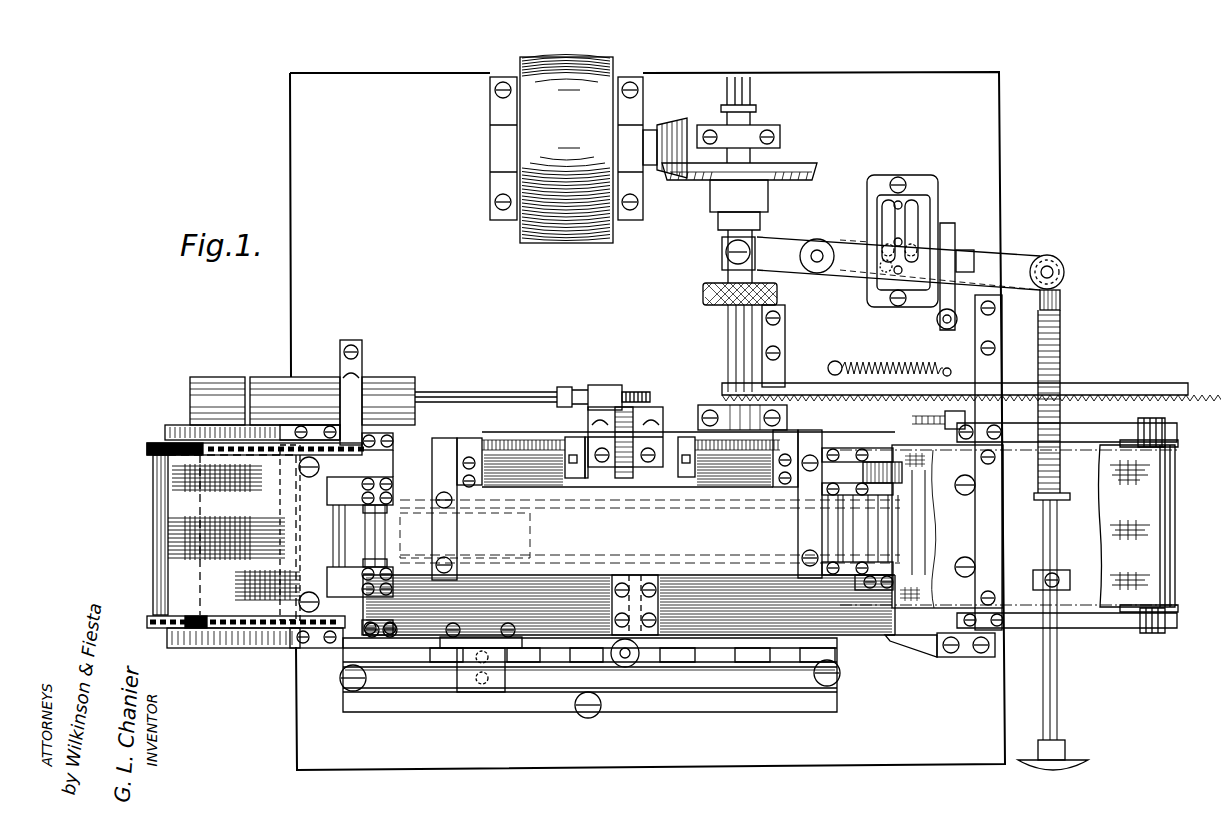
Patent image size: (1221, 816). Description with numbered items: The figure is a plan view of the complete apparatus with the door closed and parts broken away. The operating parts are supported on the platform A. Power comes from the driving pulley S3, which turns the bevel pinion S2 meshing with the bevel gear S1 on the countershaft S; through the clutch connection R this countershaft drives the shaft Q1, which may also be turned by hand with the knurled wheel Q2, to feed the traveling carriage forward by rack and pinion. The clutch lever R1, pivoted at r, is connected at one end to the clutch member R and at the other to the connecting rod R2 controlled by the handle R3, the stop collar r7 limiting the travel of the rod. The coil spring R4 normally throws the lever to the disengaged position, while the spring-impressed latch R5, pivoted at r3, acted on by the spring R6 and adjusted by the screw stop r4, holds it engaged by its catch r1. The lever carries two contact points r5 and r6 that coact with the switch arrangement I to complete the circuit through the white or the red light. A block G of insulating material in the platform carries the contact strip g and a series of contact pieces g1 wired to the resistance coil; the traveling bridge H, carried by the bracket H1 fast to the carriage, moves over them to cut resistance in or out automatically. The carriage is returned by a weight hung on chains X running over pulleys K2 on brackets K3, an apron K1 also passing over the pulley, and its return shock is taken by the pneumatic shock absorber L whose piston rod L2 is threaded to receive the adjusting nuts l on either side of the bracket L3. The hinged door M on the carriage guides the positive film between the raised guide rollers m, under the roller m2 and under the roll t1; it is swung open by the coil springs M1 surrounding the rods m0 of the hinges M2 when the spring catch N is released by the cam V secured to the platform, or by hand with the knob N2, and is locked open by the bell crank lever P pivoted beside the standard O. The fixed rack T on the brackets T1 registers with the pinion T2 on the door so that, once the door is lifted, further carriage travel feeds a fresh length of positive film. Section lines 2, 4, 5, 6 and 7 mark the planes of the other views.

The platform A is at (988, 115).
The driving pulley S3 is at (580, 55).
The bevel pinion S2 is at (670, 124).
The bevel gear S1 is at (806, 163).
The countershaft S is at (735, 228).
The clutch connection R is at (722, 252).
The clutch lever R1 is at (786, 240).
The pivot r is at (817, 245).
The switch arrangement I is at (882, 212).
The contact point r6 is at (876, 238).
The contact point r5 is at (947, 222).
The latch pivot r3 is at (937, 321).
The spring impression latch R5 is at (962, 250).
The catch r1 is at (975, 258).
The knurled wheel Q2 is at (703, 292).
The shaft Q1 is at (728, 350).
The brackets T1 is at (788, 362).
The rack T is at (1100, 383).
The hinges M2 is at (786, 432).
The spring R6 is at (898, 368).
The coil spring R4 is at (1060, 358).
The adjustable screw stop r4 is at (912, 419).
The connecting rod R2 is at (1058, 683).
The handle R3 is at (1055, 748).
The stop collar r7 is at (1062, 572).
The cam V is at (912, 652).
The pneumatic shock absorber L is at (268, 378).
The adjusting nuts l is at (560, 390).
The bracket L3 is at (598, 385).
The piston rod L2 is at (646, 392).
The standard O is at (655, 418).
The bell crank lever P is at (628, 480).
The brackets K3 is at (165, 430).
The pulleys K2 is at (146, 450).
The apron K1 is at (153, 472).
The chains X is at (300, 446).
The raised guide rollers m is at (340, 540).
The roller m2 is at (380, 530).
The hinged door M is at (688, 564).
The rods m0 is at (490, 478).
The coil springs M1 is at (545, 470).
The spring catch N is at (638, 575).
The pinion T2 is at (862, 470).
The roll t1 is at (850, 585).
The traveling bridge H is at (470, 690).
The bracket H1 is at (460, 660).
The knob N2 is at (640, 665).
The contact pieces g1 is at (712, 662).
The contact strip g is at (770, 680).
The block of insulating material G is at (812, 705).
The section line 2 is at (178, 537).
The section line 4 is at (170, 647).
The section line 5 is at (960, 235).
The section line 6 is at (628, 380).
The section line 7 is at (480, 628).